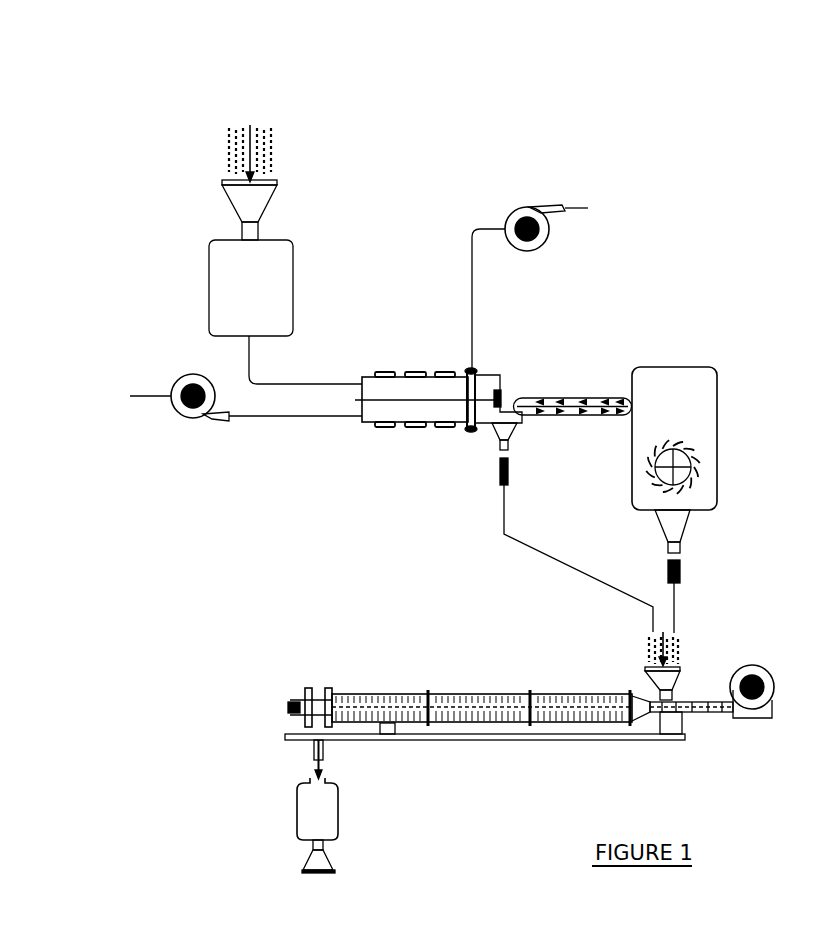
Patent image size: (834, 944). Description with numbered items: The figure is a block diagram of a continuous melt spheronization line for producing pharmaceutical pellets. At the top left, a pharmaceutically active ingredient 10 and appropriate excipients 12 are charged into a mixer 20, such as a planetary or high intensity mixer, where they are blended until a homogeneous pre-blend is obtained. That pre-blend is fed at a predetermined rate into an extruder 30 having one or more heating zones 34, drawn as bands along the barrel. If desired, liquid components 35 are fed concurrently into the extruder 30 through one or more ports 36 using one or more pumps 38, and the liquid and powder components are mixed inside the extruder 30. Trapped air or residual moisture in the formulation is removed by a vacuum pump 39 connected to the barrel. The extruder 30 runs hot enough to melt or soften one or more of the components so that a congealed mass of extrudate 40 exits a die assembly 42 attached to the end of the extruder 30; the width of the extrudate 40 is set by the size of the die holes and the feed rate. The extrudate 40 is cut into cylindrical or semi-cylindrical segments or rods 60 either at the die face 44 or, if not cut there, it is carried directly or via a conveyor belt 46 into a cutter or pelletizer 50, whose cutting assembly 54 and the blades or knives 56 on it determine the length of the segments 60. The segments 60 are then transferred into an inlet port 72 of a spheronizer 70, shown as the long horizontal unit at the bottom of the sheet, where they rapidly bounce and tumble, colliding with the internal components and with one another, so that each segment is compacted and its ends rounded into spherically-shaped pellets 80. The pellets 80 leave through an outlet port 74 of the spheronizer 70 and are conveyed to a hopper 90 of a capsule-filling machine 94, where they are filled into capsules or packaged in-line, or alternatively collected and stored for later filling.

The pharmaceutically active ingredient 10 is at (235, 133).
The excipients 12 is at (265, 133).
The mixer 20 is at (209, 268).
The extruder 30 is at (360, 428).
The heating zones 34 is at (447, 420).
The liquid components 35 is at (140, 390).
The ports 36 is at (298, 418).
The pumps 38 is at (183, 418).
The vacuum pump 39 is at (530, 207).
The extrudate 40 is at (566, 304).
The die assembly 42 is at (485, 420).
The die face 44 is at (581, 324).
The conveyor belt 46 is at (586, 414).
The pelletizer 50 is at (716, 372).
The cutting assembly 54 is at (688, 458).
The blades 56 is at (698, 460).
The segments 60 is at (680, 575).
The spheronizer 70 is at (621, 672).
The inlet port 72 is at (681, 668).
The outlet port 74 is at (310, 736).
The spherically-shaped pellets 80 is at (312, 758).
The hopper 90 is at (325, 803).
The capsule-filling machine 94 is at (347, 825).